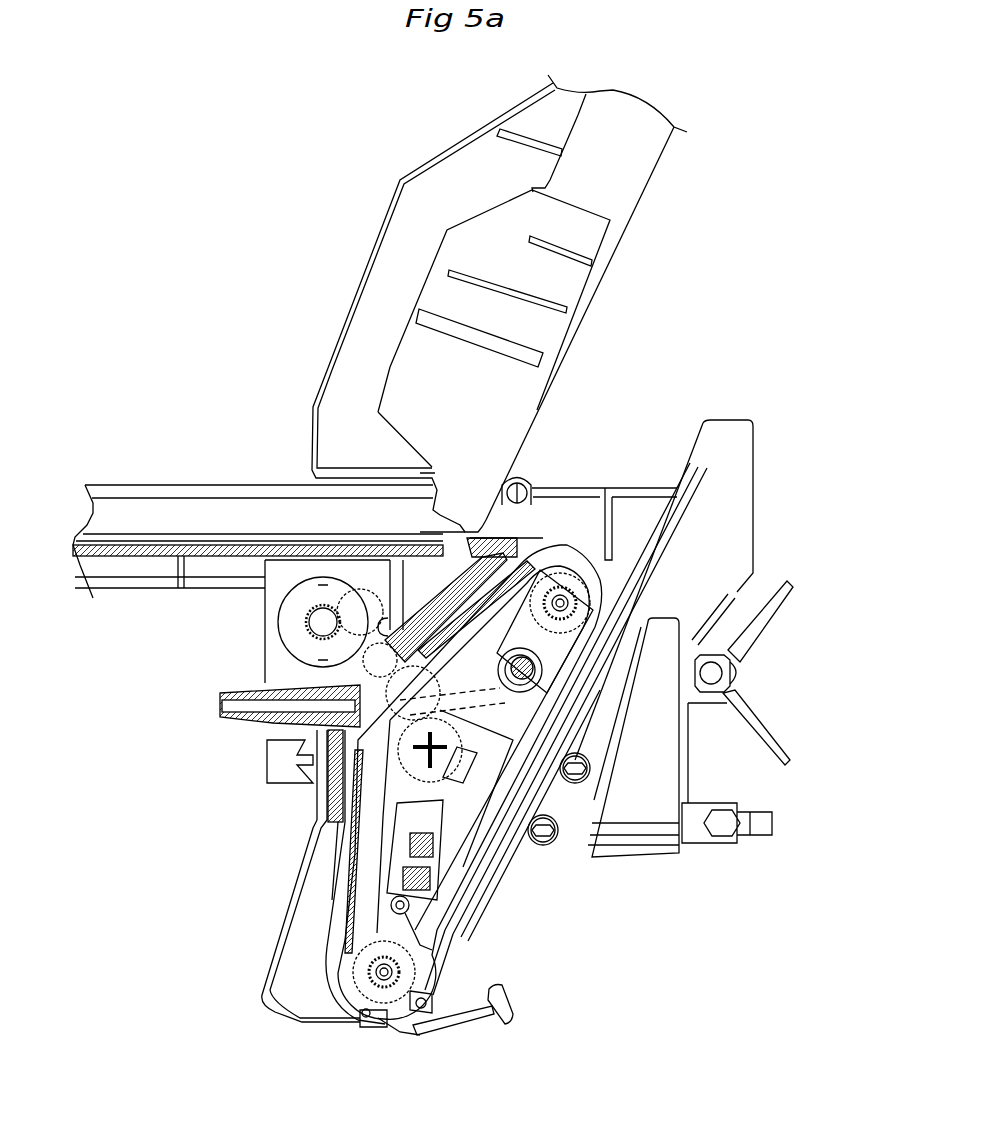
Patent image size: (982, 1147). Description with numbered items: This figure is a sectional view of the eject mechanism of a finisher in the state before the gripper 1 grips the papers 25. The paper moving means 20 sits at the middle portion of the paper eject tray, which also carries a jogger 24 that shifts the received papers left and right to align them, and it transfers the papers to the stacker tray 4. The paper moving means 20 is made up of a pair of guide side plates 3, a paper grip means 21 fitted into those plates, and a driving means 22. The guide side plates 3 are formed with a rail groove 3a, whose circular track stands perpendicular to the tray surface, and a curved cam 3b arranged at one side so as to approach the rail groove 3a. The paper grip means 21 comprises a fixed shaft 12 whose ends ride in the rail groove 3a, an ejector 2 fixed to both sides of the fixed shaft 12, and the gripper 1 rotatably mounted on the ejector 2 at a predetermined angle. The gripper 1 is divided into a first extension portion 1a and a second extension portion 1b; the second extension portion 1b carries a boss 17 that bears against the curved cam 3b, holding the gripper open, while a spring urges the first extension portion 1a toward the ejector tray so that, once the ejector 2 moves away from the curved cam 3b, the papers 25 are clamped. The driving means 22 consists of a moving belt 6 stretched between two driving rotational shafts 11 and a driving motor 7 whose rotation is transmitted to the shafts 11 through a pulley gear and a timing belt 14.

The gripper 1 is at (455, 1035).
The first extension portion 1a is at (500, 1025).
The second extension portion 1b is at (378, 1020).
The ejector 2 is at (470, 945).
The guide side plates 3 is at (310, 967).
The rail groove 3a is at (358, 858).
The curved cam 3b is at (370, 1027).
The stacker tray 4 is at (584, 230).
The moving belt 6 is at (363, 903).
The driving motor 7 is at (290, 628).
The driving rotational shafts 11 is at (560, 600).
The fixed shaft 12 is at (438, 1000).
The timing belt 14 is at (503, 657).
The boss 17 is at (365, 1015).
The paper moving means 20 is at (242, 806).
The paper grip means 21 is at (463, 1045).
The driving means 22 is at (265, 640).
The jogger 24 is at (735, 522).
The papers 25 is at (493, 873).